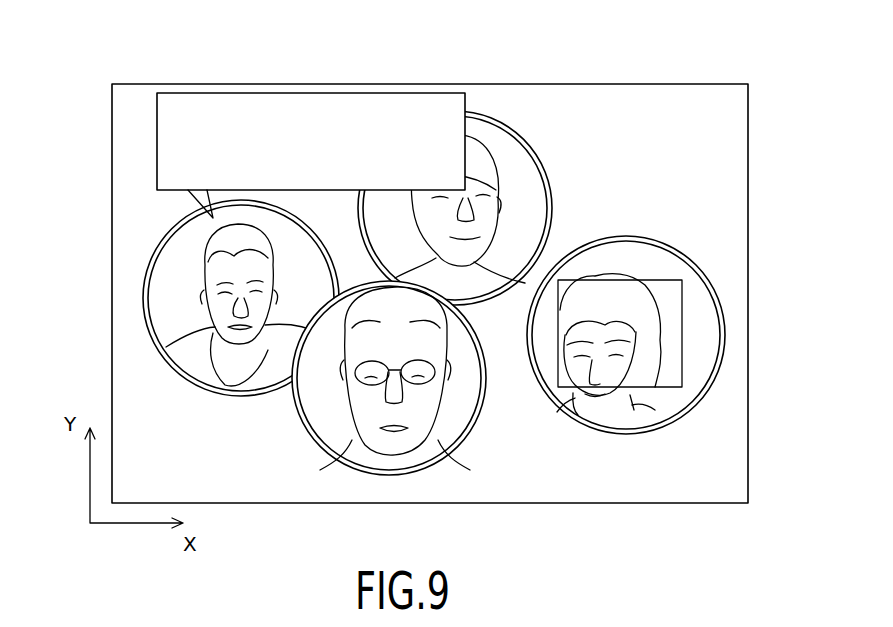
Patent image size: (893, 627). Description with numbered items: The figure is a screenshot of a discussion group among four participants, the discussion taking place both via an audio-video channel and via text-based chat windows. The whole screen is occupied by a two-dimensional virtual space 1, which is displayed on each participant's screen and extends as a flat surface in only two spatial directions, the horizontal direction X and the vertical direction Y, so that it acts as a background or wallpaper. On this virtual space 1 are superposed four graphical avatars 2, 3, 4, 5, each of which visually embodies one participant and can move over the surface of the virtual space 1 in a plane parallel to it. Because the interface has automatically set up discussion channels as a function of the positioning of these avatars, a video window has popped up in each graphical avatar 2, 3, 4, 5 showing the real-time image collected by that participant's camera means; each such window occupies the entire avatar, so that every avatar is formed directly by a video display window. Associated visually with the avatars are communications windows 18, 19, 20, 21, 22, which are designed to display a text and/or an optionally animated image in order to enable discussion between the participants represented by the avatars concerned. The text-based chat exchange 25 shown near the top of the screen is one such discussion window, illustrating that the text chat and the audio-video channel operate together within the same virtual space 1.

The virtual space 1 is at (645, 125).
The graphical avatar 2 is at (196, 298).
The graphical avatar 3 is at (392, 415).
The graphical avatar 4 is at (462, 167).
The graphical avatar 5 is at (665, 335).
The communications window 18 is at (177, 250).
The communications window 19 is at (322, 415).
The communications window 20 is at (522, 127).
The communications window 21 is at (665, 290).
The communications window 22 is at (698, 313).
The chat message bubble 25 is at (237, 93).